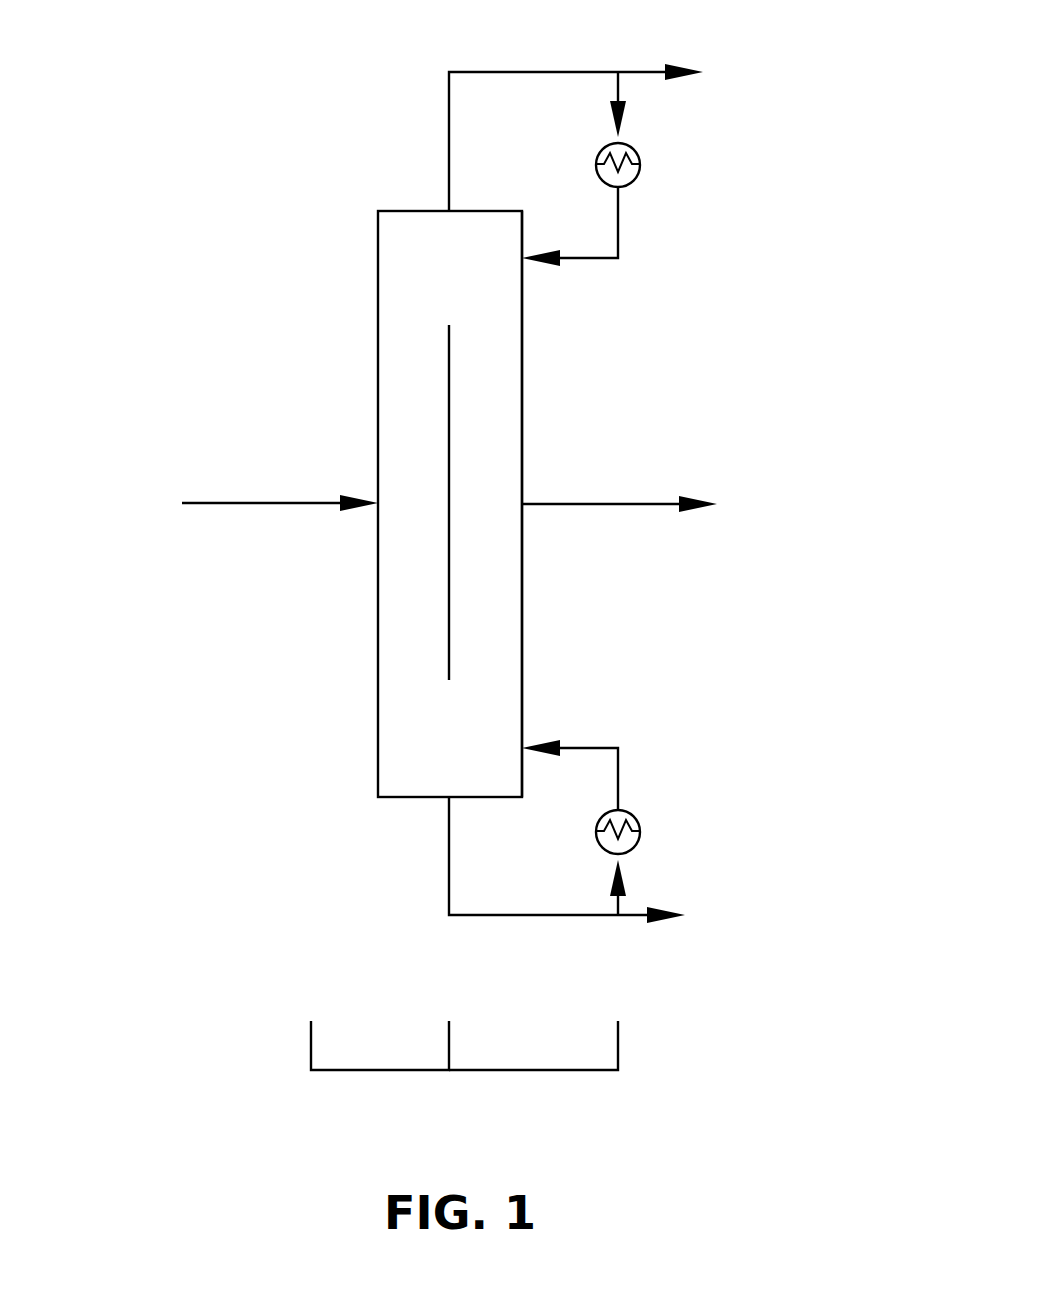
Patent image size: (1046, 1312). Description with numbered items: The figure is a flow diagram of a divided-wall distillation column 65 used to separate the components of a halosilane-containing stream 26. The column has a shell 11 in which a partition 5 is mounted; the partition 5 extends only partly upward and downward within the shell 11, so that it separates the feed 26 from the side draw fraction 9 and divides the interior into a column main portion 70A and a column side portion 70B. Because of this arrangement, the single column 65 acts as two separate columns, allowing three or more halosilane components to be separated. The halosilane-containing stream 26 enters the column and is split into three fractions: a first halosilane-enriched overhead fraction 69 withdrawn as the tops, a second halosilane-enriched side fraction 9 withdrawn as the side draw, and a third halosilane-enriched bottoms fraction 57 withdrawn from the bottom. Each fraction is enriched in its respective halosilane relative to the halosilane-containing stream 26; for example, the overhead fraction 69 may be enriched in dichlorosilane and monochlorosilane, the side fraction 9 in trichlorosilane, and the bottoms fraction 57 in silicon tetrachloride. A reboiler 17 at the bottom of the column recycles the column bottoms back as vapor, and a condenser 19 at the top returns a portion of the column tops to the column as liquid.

The distillation column 65 is at (342, 269).
The partition 5 is at (450, 363).
The shell 11 is at (522, 566).
The halosilane-containing stream 26 is at (210, 502).
The second halosilane-enriched side fraction 9 is at (607, 504).
The first halosilane-enriched overhead fraction 69 is at (638, 71).
The condenser 19 is at (640, 152).
The third halosilane-enriched bottoms fraction 57 is at (633, 912).
The reboiler 17 is at (640, 822).
The column main portion 70A is at (367, 1070).
The column side portion 70B is at (538, 1070).